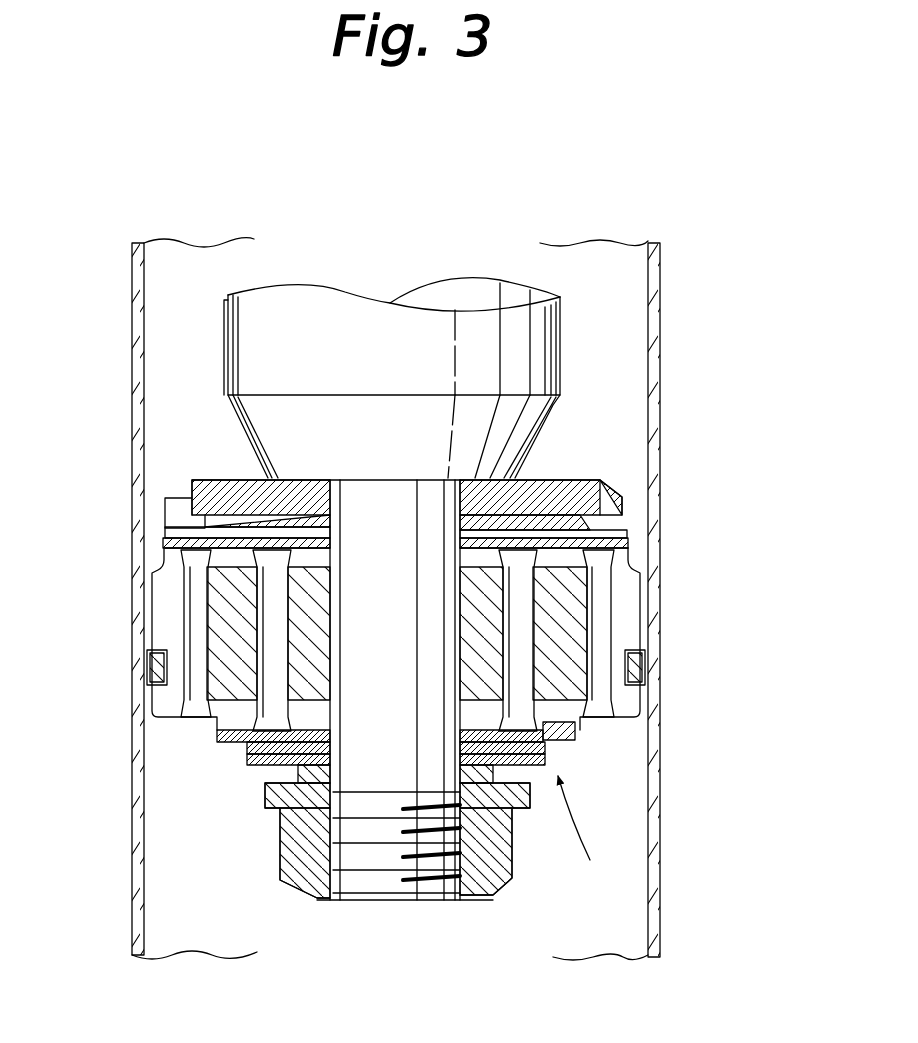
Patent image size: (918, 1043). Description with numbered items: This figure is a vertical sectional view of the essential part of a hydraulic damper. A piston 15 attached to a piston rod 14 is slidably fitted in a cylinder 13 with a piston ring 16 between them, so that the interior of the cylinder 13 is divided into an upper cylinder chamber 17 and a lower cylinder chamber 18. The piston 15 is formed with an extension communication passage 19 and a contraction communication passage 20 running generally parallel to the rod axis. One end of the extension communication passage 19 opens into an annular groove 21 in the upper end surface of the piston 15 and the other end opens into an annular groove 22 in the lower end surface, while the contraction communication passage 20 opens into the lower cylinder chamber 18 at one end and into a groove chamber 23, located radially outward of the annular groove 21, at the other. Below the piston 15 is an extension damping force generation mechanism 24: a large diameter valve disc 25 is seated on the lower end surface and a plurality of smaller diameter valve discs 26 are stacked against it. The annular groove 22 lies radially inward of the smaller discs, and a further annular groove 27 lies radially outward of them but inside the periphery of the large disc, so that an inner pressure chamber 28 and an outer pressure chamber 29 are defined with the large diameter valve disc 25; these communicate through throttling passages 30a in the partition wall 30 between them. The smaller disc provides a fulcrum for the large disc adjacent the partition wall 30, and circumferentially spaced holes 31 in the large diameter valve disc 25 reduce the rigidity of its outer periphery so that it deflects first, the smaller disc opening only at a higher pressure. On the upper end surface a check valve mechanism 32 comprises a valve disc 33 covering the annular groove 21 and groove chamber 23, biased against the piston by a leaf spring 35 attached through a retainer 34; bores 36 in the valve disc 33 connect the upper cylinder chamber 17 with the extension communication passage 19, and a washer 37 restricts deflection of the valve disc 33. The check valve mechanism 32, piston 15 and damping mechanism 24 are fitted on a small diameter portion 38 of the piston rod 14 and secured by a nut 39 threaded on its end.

The cylinder 13 is at (652, 308).
The piston rod 14 is at (552, 370).
The piston 15 is at (623, 613).
The piston ring 16 is at (645, 665).
The upper cylinder chamber 17 is at (630, 264).
The lower cylinder chamber 18 is at (594, 940).
The extension communication passage 19 is at (272, 615).
The contraction communication passage 20 is at (197, 662).
The annular groove 21 is at (256, 575).
The annular groove 22 is at (522, 712).
The groove chamber 23 is at (178, 560).
The extension damping force generation mechanism 24 is at (540, 787).
The large diameter valve disc 25 is at (585, 757).
The smaller diameter valve disc 26 is at (553, 773).
The annular groove 27 is at (573, 745).
The inner pressure chamber 28 is at (585, 720).
The outer pressure chamber 29 is at (587, 740).
The partition wall 30 is at (233, 723).
The throttling passages 30a is at (553, 757).
The holes 31 is at (533, 767).
The check valve mechanism 32 is at (205, 500).
The valve disc 33 is at (167, 540).
The retainer 34 is at (235, 330).
The leaf spring 35 is at (243, 478).
The bores 36 is at (233, 367).
The washer 37 is at (235, 487).
The small diameter portion 38 is at (362, 757).
The nut 39 is at (483, 872).